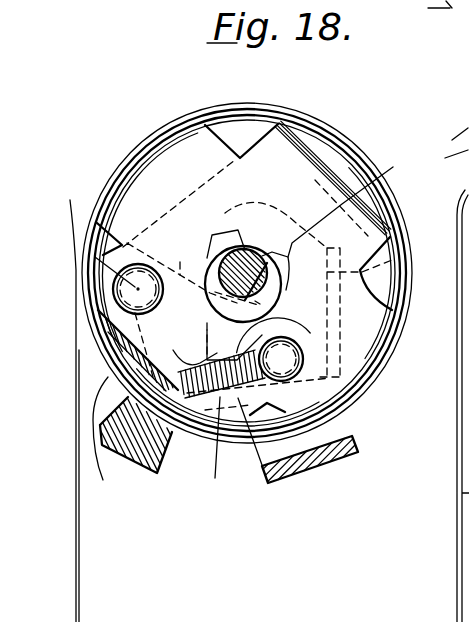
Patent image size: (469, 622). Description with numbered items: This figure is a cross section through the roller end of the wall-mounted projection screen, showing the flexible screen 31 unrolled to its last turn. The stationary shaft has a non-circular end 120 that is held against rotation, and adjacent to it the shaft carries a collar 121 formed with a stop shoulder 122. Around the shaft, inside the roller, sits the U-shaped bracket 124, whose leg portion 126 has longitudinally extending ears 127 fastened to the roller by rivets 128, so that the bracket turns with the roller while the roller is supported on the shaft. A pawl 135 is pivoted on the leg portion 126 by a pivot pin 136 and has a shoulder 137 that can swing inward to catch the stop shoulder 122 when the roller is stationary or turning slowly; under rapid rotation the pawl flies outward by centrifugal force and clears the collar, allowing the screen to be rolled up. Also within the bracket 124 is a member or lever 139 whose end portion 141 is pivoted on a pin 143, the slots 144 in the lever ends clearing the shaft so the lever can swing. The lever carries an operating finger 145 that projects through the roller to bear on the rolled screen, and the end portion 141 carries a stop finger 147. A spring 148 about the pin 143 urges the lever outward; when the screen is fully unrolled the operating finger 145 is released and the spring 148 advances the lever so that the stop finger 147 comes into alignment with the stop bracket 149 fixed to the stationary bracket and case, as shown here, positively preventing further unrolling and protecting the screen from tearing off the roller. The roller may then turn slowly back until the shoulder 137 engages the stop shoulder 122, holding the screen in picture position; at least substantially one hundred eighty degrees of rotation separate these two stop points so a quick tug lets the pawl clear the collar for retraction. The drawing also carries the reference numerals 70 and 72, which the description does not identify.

The flexible screen 31 is at (78, 532).
The rod 70 is at (318, 420).
The bracket 72 is at (360, 398).
The non-circular end 120 is at (232, 252).
The collar 121 is at (370, 185).
The stop shoulder 122 is at (270, 252).
The U-shaped bracket 124 is at (313, 150).
The leg portion 126 is at (262, 152).
The longitudinally extending ears 127 is at (181, 135).
The rivets 128 is at (133, 158).
The pawl 135 is at (258, 405).
The pivot pin 136 is at (283, 343).
The shoulder 137 is at (196, 358).
The member or lever 139 is at (393, 245).
The end portion 141 is at (243, 194).
The pin 143 is at (97, 397).
The slots 144 is at (160, 293).
The operating finger 145 is at (103, 470).
The stop finger 147 is at (168, 460).
The spring 148 is at (154, 272).
The stop bracket 149 is at (306, 470).